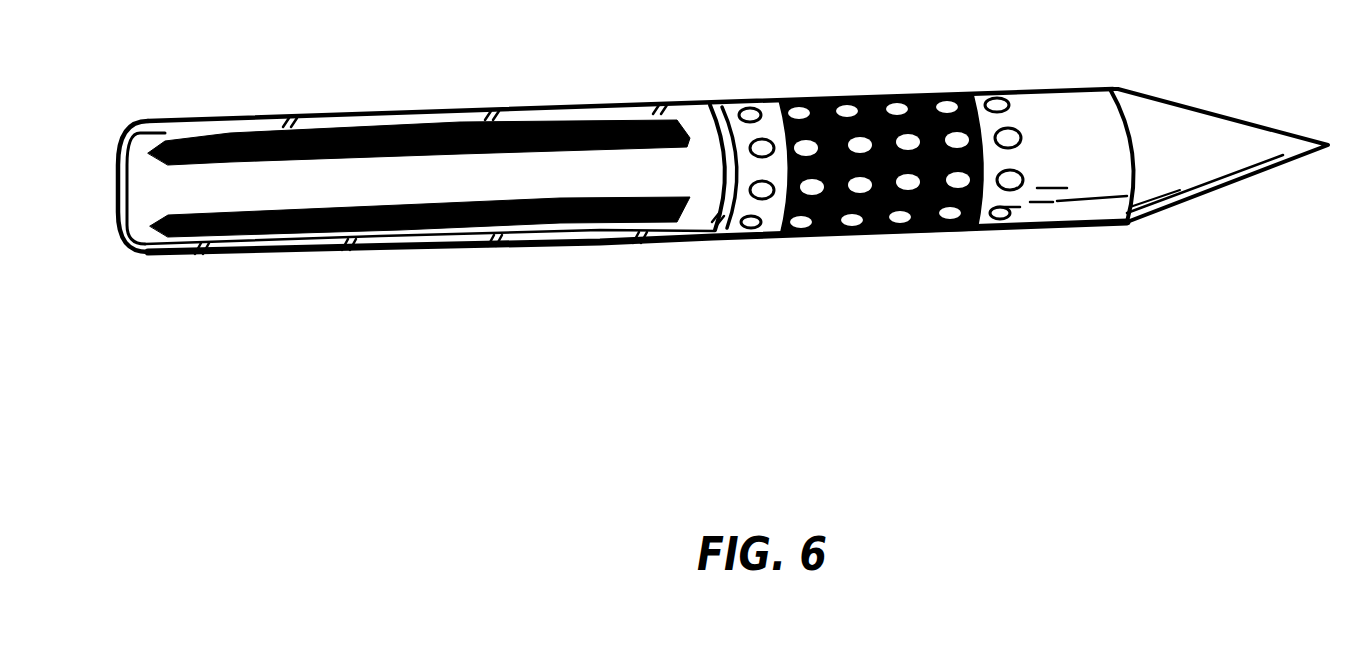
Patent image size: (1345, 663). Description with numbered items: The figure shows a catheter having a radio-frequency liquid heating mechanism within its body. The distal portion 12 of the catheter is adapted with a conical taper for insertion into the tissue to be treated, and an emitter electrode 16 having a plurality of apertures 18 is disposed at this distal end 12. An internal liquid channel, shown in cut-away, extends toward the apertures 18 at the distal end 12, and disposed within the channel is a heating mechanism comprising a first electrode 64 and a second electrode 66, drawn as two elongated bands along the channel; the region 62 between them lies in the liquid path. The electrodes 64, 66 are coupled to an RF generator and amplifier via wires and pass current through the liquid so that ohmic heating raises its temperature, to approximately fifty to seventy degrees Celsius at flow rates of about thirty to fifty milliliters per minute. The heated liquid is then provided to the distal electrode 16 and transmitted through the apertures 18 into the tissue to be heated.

The distal end 12 is at (395, 112).
The emitter electrode 16 is at (872, 95).
The apertures 18 is at (805, 147).
The inner lumen 62 is at (275, 175).
The first electrode 64 is at (598, 122).
The second electrode 66 is at (597, 228).